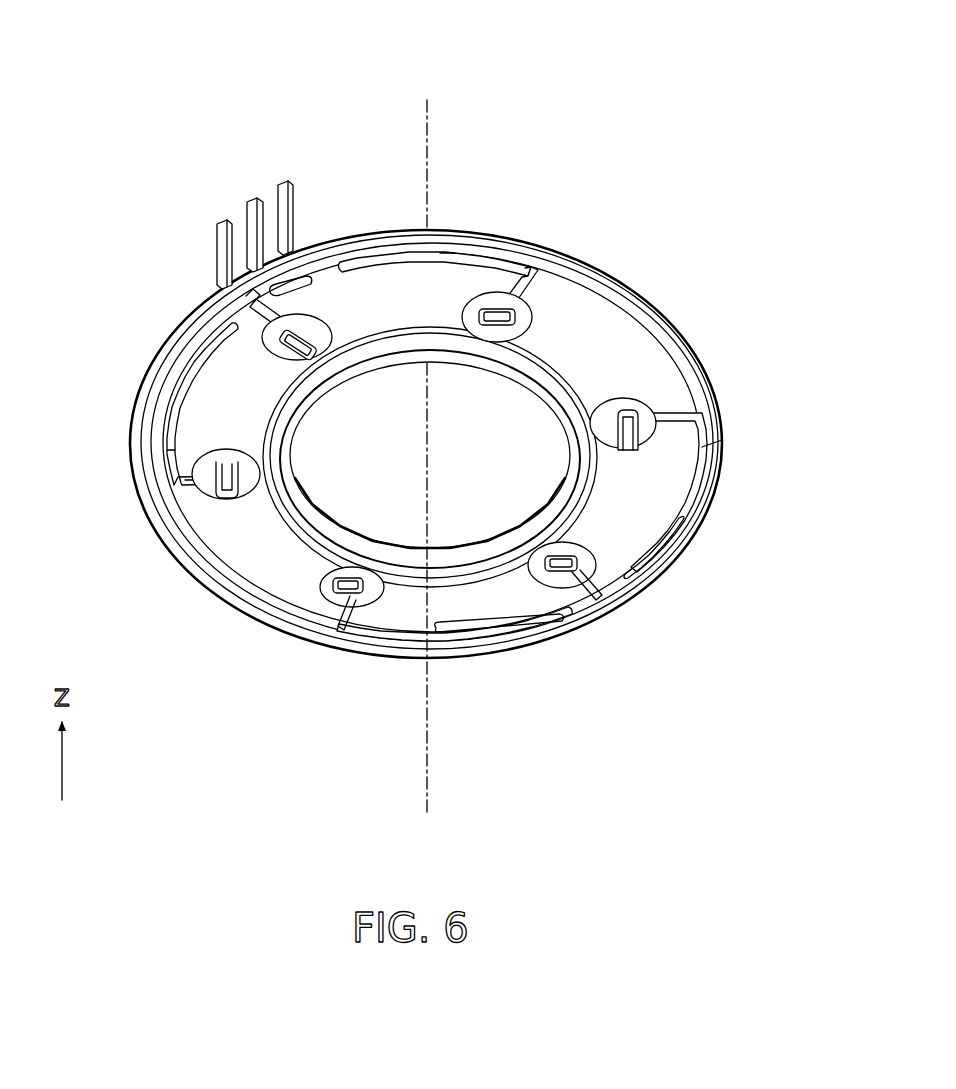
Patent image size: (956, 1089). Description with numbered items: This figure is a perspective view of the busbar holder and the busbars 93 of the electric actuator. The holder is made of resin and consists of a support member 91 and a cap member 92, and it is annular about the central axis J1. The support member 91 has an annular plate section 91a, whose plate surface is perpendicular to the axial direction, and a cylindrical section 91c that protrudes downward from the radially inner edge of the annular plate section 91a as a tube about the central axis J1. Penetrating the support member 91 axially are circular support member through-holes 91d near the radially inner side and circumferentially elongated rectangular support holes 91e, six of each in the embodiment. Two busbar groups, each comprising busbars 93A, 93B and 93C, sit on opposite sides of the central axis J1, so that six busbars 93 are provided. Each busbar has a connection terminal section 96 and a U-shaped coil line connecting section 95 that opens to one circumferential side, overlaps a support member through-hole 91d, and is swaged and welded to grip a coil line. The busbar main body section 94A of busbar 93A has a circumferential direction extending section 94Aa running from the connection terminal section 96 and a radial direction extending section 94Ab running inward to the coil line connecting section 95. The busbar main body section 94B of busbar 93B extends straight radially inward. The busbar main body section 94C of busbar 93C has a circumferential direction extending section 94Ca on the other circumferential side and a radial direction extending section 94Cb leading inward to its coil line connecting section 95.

The support member 91 is at (372, 228).
The annular plate section 91a is at (690, 384).
The cylindrical section 91c is at (471, 578).
The support member through-holes 91d is at (302, 332).
The support holes 91e is at (236, 306).
The cap member 92 is at (413, 228).
The busbars 93 is at (292, 106).
The busbar 93A is at (430, 68).
The busbar 93B is at (247, 200).
The busbar 93C is at (212, 216).
The busbar main body section 94A is at (595, 160).
The circumferential direction extending section 94Aa is at (447, 260).
The radial direction extending section 94Ab is at (547, 262).
The busbar main body section 94B is at (248, 348).
The busbar main body section 94C is at (240, 658).
The circumferential direction extending section 94Ca is at (164, 458).
The radial direction extending section 94Cb is at (190, 486).
The coil line connecting section 95 is at (527, 313).
The connection terminal section 96 is at (288, 209).
The central axis J1 is at (431, 128).